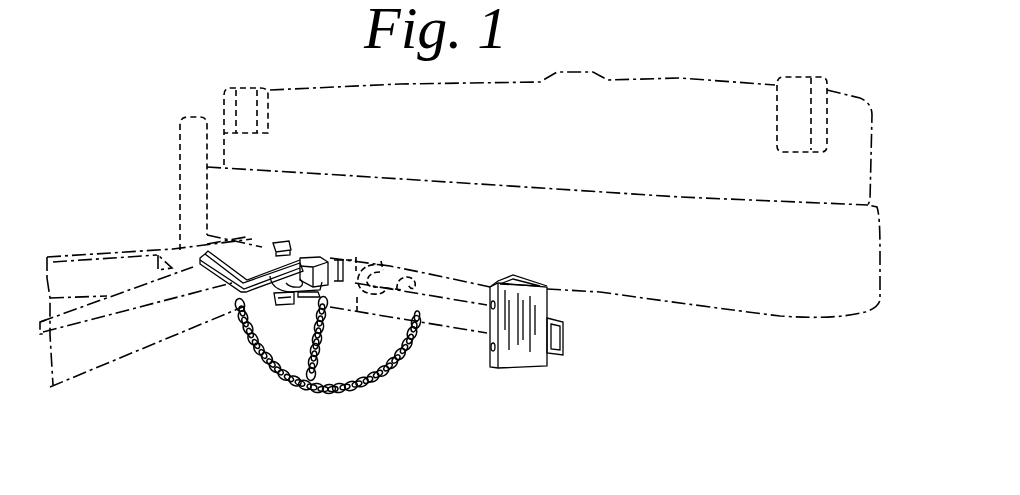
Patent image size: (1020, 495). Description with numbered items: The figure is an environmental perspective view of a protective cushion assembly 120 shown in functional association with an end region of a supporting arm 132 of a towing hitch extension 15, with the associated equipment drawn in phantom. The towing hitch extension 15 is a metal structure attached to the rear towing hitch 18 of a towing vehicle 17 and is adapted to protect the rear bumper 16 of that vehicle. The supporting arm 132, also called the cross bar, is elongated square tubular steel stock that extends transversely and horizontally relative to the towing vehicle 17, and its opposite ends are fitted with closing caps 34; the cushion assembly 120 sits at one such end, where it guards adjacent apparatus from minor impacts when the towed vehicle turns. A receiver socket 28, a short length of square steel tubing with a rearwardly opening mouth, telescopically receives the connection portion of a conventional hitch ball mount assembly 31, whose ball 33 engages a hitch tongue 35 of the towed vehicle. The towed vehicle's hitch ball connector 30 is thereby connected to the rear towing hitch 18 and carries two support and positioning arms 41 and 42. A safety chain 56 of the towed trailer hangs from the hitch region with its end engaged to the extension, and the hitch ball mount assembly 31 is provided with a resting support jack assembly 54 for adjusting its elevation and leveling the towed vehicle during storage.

The towing hitch extension 15 is at (454, 287).
The rear bumper 16 is at (840, 278).
The towing vehicle 17 is at (847, 143).
The rear towing hitch 18 is at (322, 255).
The receiver socket 28 is at (305, 293).
The hitch ball connector 30 is at (285, 240).
The hitch ball mount assembly 31 is at (293, 292).
The ball 33 is at (300, 255).
The closing cap 34 is at (567, 337).
The hitch tongue 35 is at (227, 288).
The support and positioning arm 41 is at (78, 357).
The support and positioning arm 42 is at (93, 270).
The resting support jack assembly 54 is at (192, 158).
The safety chain 56 is at (360, 382).
The protective cushion assembly 120 is at (525, 375).
The supporting arm 132 is at (470, 328).